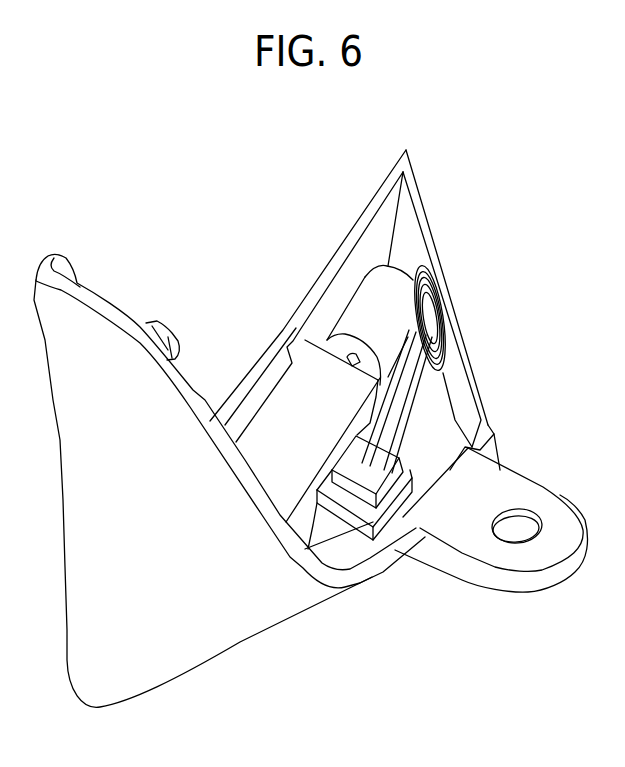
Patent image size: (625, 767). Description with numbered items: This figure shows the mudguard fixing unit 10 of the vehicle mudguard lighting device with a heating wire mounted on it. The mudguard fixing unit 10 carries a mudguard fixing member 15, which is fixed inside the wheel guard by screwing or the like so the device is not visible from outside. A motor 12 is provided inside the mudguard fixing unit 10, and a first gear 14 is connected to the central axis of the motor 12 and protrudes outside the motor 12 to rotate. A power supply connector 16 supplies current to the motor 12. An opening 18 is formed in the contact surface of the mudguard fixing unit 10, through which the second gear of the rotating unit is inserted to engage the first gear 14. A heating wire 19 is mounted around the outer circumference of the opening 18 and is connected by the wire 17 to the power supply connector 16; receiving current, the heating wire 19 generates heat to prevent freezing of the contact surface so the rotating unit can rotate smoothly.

The mudguard fixing unit 10 is at (227, 617).
The motor 12 is at (275, 418).
The first gear 14 is at (365, 304).
The mudguard fixing member 15 is at (532, 582).
The power supply connector 16 is at (360, 527).
The wire 17 is at (357, 424).
The opening 18 is at (437, 318).
The heating wire 19 is at (445, 352).